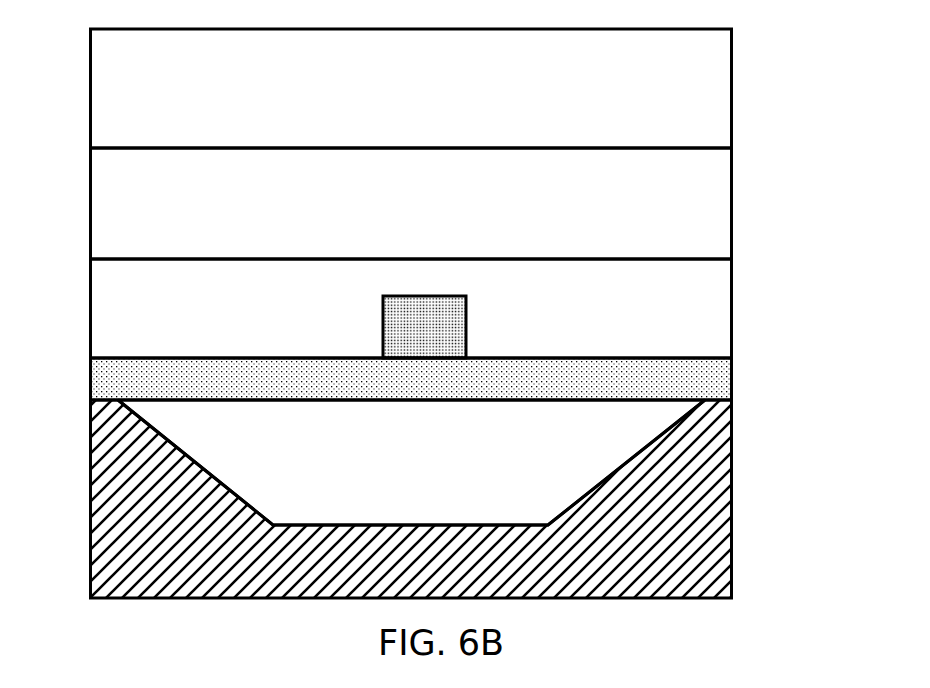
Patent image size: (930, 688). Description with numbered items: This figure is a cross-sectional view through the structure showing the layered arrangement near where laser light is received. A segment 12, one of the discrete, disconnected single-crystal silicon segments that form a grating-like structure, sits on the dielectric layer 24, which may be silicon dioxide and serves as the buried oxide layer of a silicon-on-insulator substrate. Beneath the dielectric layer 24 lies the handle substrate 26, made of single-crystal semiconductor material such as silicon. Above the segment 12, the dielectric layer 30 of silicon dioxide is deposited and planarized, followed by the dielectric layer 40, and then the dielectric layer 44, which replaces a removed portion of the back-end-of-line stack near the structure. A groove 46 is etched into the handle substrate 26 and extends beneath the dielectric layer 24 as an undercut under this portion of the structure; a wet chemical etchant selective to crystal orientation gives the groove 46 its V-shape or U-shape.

The segments 12 is at (445, 320).
The dielectric layer 24 is at (688, 380).
The handle substrate 26 is at (120, 517).
The dielectric layer 30 is at (685, 300).
The dielectric layer 40 is at (670, 210).
The dielectric layer 44 is at (667, 77).
The groove 46 is at (434, 462).